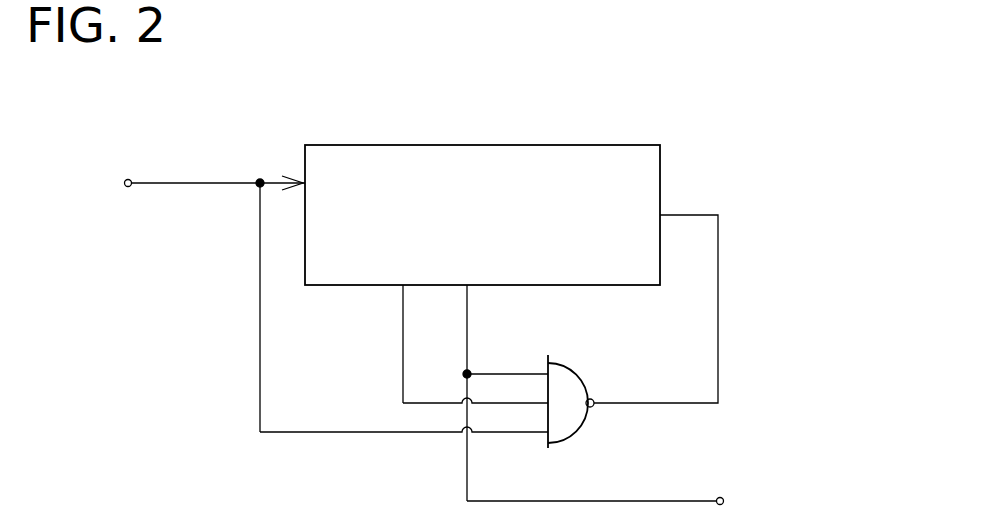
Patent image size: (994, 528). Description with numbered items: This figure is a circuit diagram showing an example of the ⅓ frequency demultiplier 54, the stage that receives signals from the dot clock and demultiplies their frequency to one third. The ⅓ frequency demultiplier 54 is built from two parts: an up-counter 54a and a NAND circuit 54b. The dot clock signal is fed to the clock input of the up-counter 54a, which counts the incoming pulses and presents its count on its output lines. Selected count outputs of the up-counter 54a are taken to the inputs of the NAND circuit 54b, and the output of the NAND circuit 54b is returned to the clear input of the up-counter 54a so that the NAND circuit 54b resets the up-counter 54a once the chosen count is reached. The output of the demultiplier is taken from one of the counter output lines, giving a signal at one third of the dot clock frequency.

The ⅓ frequency demultiplier 54 is at (450, 302).
The up-counter 54a is at (542, 150).
The NAND circuit 54b is at (575, 425).